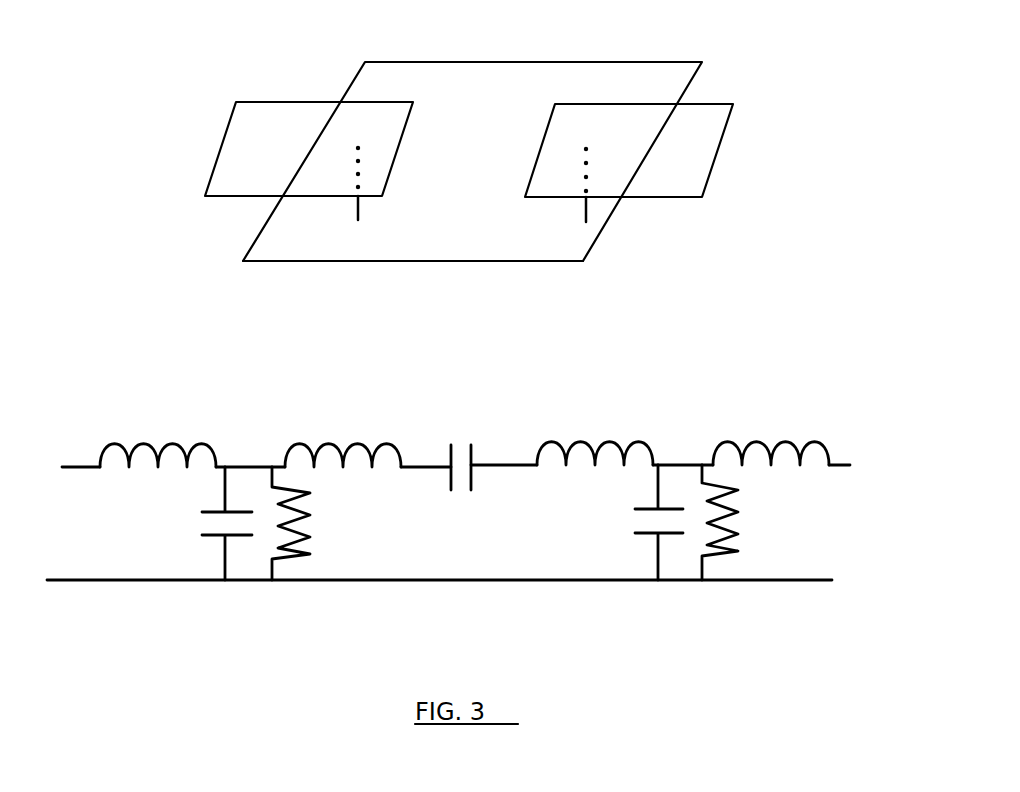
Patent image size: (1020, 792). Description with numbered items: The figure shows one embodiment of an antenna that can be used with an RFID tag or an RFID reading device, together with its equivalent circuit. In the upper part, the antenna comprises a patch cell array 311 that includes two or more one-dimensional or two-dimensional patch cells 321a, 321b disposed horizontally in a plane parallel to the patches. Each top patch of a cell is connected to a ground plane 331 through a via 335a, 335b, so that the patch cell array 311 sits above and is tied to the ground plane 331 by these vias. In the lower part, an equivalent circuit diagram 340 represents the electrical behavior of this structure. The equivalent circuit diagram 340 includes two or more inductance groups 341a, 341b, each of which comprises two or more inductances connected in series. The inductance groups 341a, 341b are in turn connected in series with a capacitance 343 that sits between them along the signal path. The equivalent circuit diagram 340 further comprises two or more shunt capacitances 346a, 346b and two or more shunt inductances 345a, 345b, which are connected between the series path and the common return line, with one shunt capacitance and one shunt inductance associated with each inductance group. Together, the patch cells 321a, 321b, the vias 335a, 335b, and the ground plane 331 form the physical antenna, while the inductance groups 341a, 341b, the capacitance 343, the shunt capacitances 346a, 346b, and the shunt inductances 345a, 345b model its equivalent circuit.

The patch cell array 311 is at (472, 141).
The patch cell 321a is at (309, 149).
The patch cell 321b is at (629, 150).
The ground plane 331 is at (323, 254).
The via 335a is at (355, 207).
The via 335b is at (587, 210).
The equivalent circuit diagram 340 is at (442, 470).
The inductance group 341a is at (342, 430).
The inductance group 341b is at (767, 433).
The capacitance 343 is at (463, 448).
The shunt inductance 345a is at (330, 523).
The shunt inductance 345b is at (762, 522).
The shunt capacitance 346a is at (195, 523).
The shunt capacitance 346b is at (623, 522).